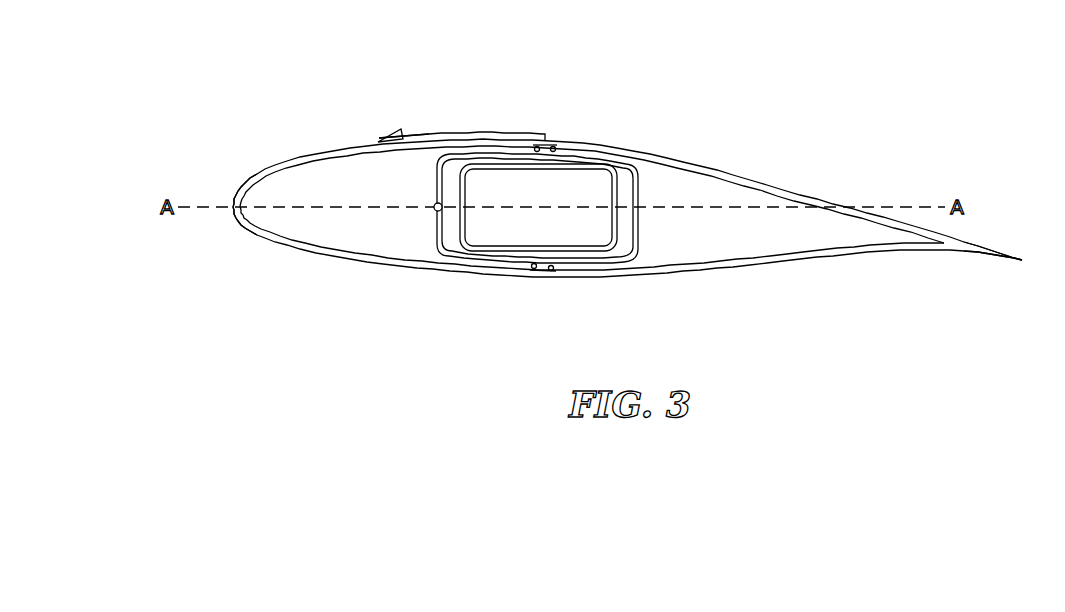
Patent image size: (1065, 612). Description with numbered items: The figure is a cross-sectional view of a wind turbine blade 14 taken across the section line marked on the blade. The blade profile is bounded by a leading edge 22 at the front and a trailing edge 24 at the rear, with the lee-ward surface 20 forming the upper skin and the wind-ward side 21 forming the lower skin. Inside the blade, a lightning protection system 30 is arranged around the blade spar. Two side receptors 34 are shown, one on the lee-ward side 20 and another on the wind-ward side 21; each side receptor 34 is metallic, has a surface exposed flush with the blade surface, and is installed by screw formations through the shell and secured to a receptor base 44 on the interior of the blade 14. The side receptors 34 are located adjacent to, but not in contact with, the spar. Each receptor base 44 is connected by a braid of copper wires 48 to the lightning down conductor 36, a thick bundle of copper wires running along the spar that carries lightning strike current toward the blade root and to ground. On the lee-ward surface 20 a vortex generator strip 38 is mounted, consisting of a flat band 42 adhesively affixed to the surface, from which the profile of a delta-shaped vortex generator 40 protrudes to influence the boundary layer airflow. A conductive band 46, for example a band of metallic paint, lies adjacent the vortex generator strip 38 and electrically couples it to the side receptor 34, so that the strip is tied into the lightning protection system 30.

The wind turbine blade 14 is at (286, 124).
The lee-ward surface 20 is at (616, 146).
The wind-ward side 21 is at (698, 273).
The leading edge 22 is at (257, 176).
The trailing edge 24 is at (998, 263).
The lightning protection system 30 is at (479, 67).
The side receptor 34 is at (546, 143).
The lightning down conductor 36 is at (434, 207).
The vortex generator strip 38 is at (388, 117).
The vortex generator 40 is at (404, 131).
The flat band 42 is at (378, 140).
The receptor base 44 is at (532, 276).
The conductive band 46 is at (490, 134).
The braid of copper wires 48 is at (438, 252).